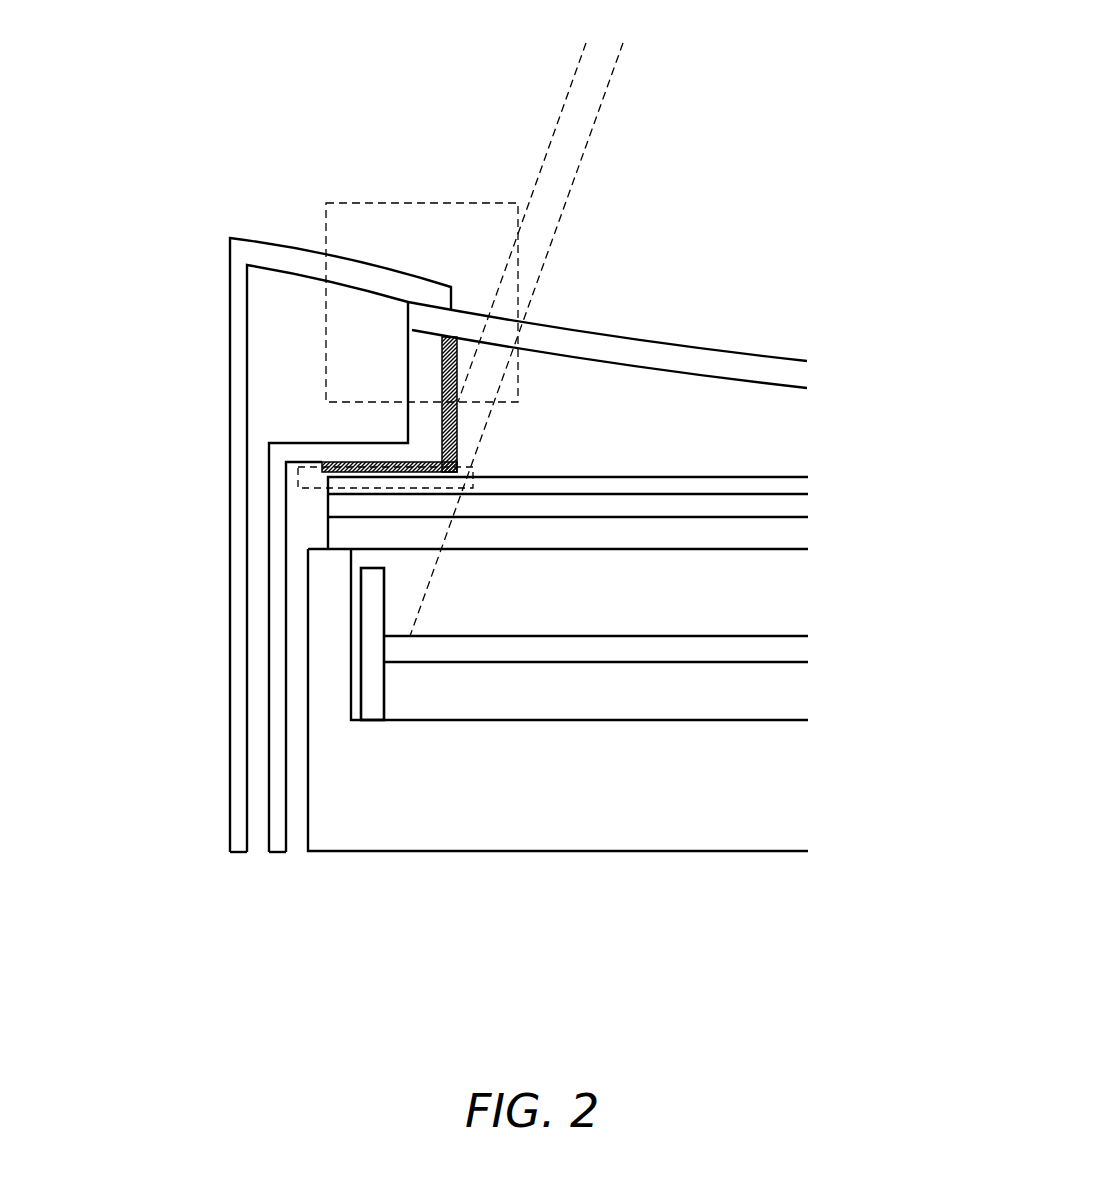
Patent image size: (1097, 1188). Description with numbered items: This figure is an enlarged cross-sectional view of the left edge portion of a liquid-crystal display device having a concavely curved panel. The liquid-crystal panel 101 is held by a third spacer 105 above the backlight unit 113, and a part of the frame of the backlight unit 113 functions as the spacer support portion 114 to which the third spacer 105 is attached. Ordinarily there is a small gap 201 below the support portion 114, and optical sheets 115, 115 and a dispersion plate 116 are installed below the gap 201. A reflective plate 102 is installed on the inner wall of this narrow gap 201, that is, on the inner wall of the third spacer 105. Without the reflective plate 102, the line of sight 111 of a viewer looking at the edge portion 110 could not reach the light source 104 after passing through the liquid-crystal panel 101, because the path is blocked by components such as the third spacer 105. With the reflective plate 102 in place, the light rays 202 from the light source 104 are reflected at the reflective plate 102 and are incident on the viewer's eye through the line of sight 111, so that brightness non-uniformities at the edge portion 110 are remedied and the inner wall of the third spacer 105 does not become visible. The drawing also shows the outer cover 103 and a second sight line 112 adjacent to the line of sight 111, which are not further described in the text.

The liquid-crystal panel 101 is at (643, 343).
The reflective plate 102 is at (457, 430).
The front cover 103 is at (228, 258).
The light source 104 is at (552, 648).
The third spacer 105 is at (422, 385).
The edge portion 110 is at (370, 200).
The line of sight 111 is at (535, 163).
The second boundary line 112 is at (558, 223).
The backlight unit 113 is at (199, 709).
The support portion 114 is at (350, 450).
The optical sheet 115 is at (740, 490).
The dispersion plate 116 is at (733, 544).
The gap 201 is at (415, 490).
The light ray 202 is at (518, 478).